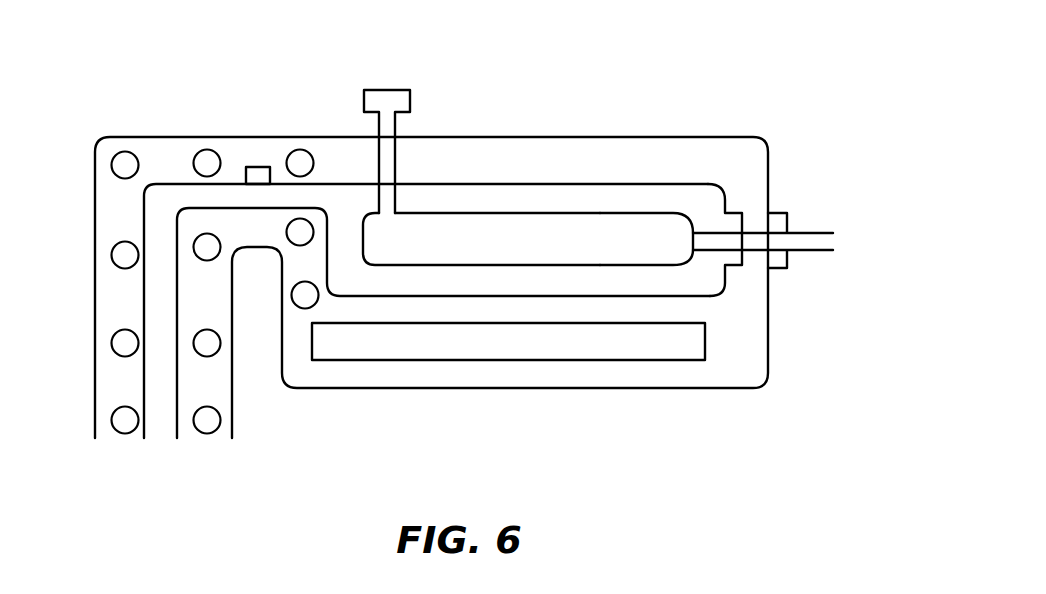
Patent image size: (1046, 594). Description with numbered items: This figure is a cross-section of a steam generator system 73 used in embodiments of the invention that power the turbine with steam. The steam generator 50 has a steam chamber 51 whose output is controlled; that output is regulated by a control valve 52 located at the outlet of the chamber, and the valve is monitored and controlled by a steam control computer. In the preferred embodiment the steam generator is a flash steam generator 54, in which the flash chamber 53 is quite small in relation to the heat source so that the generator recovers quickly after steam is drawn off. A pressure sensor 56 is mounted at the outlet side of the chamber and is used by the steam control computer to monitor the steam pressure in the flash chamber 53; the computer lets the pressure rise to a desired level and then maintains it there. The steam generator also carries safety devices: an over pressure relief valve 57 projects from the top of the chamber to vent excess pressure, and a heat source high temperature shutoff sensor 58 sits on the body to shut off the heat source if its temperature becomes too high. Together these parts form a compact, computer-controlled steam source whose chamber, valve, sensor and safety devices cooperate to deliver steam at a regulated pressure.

The steam generator 50 is at (693, 250).
The steam chamber 51 is at (505, 215).
The control valve 52 is at (780, 210).
The flash chamber 53 is at (610, 215).
The flash steam generator 54 is at (620, 138).
The pressure sensor 56 is at (730, 212).
The over pressure relief valve 57 is at (392, 90).
The heat source high temperature shutoff sensor 58 is at (258, 166).
The steam generator system 73 is at (477, 138).